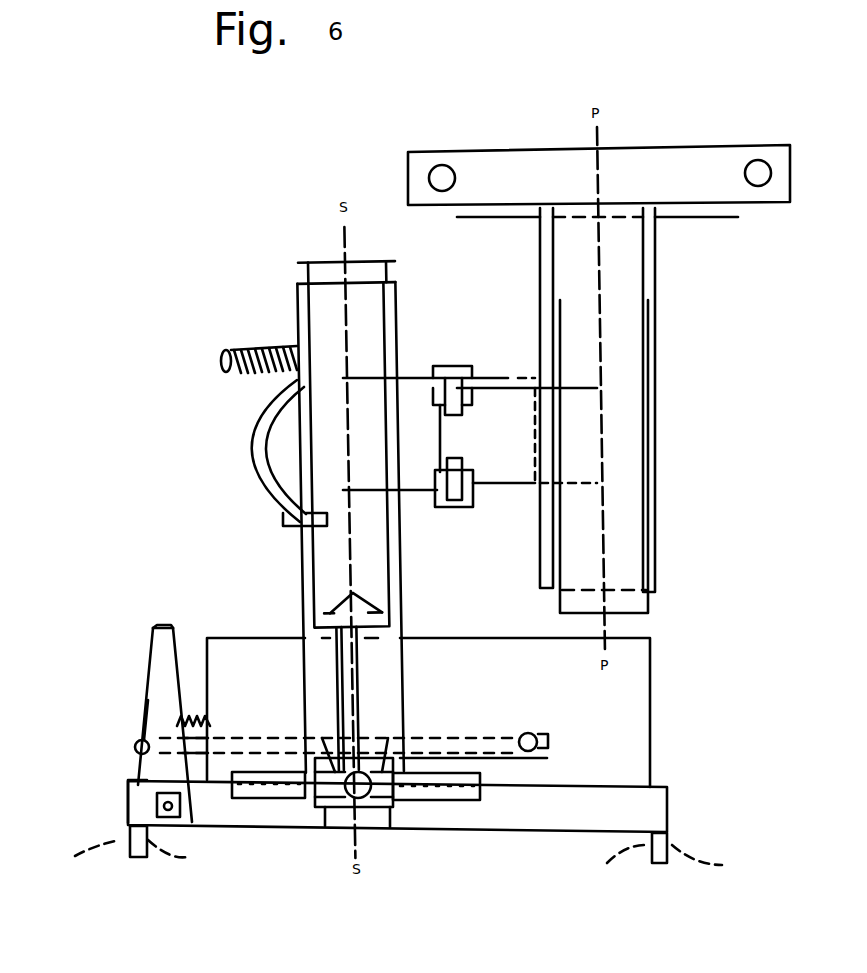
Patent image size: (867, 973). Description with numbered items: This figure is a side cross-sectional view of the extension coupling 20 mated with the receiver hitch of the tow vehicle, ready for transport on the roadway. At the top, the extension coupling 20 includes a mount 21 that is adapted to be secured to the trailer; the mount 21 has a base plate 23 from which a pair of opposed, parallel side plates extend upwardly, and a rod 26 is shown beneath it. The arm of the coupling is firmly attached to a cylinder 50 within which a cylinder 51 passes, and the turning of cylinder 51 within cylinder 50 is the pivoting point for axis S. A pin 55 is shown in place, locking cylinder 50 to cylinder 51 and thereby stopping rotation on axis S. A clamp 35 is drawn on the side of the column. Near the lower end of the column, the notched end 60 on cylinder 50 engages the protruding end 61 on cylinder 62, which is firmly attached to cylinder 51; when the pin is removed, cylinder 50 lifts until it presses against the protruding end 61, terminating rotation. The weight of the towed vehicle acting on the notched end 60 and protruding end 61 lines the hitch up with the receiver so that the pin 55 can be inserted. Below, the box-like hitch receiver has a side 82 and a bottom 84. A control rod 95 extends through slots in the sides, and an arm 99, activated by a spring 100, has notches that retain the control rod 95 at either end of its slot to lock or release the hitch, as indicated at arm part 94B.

The extension coupling 20 is at (228, 480).
The mount 21 is at (386, 178).
The base plate 23 is at (450, 212).
The guide rod 26 is at (517, 222).
The clamp 35 is at (452, 362).
The cylinder 50 is at (343, 530).
The cylinder 51 is at (307, 272).
The pin 55 is at (300, 340).
The notched end 60 is at (363, 593).
The protruding end 61 is at (380, 612).
The cylinder 62 is at (375, 657).
The side 82 is at (290, 647).
The bottom 84 is at (137, 793).
The lever arm 94B is at (153, 652).
The control rod 95 is at (136, 745).
The arm 99 is at (142, 703).
The spring 100 is at (198, 715).